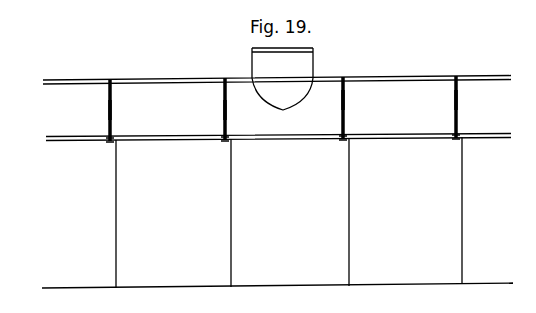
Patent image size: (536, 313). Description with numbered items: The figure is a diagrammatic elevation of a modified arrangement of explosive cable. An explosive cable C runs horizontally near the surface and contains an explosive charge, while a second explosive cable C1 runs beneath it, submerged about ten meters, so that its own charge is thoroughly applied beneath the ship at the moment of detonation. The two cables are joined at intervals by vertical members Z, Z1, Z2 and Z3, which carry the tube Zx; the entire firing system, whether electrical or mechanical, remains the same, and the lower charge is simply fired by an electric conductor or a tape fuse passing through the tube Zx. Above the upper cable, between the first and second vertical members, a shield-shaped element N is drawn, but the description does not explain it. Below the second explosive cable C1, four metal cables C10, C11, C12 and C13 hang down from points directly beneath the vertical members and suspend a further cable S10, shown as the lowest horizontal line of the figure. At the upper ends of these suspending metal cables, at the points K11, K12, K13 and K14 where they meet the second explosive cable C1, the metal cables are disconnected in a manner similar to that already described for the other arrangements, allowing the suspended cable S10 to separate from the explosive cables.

The explosive cable C is at (142, 80).
The second explosive cable C1 is at (57, 137).
The cable S10 is at (277, 274).
The shield / nose piece N is at (282, 79).
The cross bar Z is at (107, 99).
The cross bar Z1 is at (225, 96).
The cross bar Z2 is at (345, 95).
The cross bar Z3 is at (458, 93).
The tube Zx is at (455, 97).
The disconnection point K11 is at (100, 154).
The disconnection point K12 is at (217, 152).
The disconnection point K13 is at (334, 151).
The disconnection point K14 is at (451, 150).
The metal cable C10 is at (116, 210).
The metal cable C11 is at (231, 200).
The metal cable C12 is at (349, 200).
The metal cable C13 is at (462, 199).